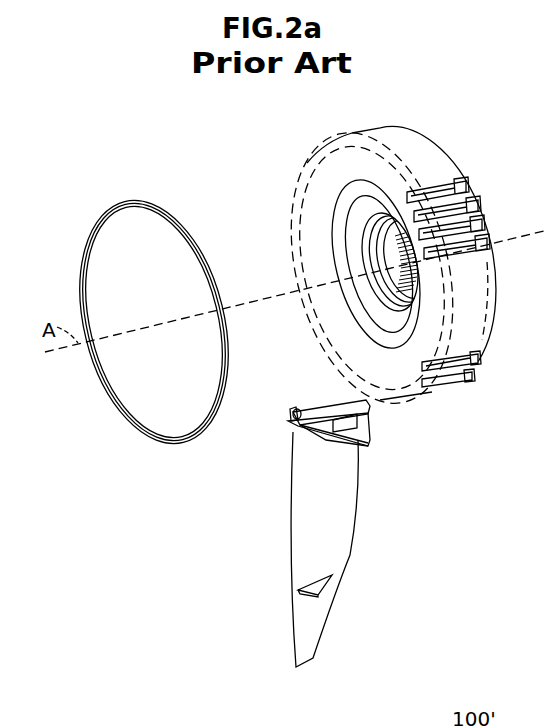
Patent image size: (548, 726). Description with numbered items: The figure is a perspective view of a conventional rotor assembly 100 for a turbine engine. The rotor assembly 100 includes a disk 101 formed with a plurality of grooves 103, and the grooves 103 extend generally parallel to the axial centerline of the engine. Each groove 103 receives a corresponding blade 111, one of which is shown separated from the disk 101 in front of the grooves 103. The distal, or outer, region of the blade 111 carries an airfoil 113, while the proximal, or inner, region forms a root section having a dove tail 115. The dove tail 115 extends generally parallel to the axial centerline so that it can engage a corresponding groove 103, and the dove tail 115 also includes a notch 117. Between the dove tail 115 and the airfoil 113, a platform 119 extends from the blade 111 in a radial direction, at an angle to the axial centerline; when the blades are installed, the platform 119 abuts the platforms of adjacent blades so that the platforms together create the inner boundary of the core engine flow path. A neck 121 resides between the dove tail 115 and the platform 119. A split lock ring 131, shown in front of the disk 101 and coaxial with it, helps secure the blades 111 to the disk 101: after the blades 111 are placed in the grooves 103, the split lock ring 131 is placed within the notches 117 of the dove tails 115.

The rotor assembly 100 is at (190, 150).
The disk 101 is at (336, 196).
The grooves 103 is at (432, 190).
The blade 111 is at (338, 523).
The airfoil 113 is at (311, 618).
The dove tail 115 is at (368, 408).
The notch 117 is at (311, 414).
The platform 119 is at (326, 440).
The neck 121 is at (368, 437).
The split lock ring 131 is at (158, 440).